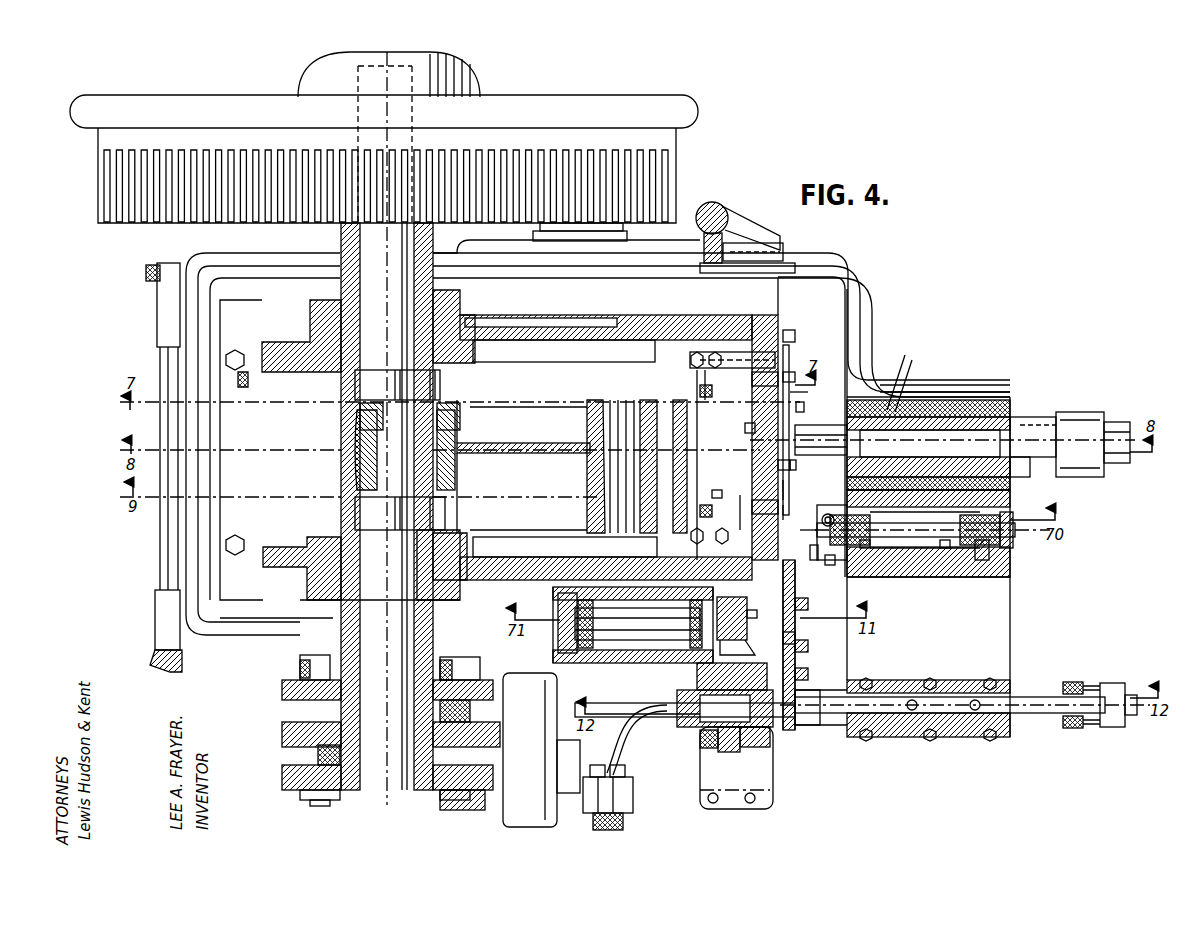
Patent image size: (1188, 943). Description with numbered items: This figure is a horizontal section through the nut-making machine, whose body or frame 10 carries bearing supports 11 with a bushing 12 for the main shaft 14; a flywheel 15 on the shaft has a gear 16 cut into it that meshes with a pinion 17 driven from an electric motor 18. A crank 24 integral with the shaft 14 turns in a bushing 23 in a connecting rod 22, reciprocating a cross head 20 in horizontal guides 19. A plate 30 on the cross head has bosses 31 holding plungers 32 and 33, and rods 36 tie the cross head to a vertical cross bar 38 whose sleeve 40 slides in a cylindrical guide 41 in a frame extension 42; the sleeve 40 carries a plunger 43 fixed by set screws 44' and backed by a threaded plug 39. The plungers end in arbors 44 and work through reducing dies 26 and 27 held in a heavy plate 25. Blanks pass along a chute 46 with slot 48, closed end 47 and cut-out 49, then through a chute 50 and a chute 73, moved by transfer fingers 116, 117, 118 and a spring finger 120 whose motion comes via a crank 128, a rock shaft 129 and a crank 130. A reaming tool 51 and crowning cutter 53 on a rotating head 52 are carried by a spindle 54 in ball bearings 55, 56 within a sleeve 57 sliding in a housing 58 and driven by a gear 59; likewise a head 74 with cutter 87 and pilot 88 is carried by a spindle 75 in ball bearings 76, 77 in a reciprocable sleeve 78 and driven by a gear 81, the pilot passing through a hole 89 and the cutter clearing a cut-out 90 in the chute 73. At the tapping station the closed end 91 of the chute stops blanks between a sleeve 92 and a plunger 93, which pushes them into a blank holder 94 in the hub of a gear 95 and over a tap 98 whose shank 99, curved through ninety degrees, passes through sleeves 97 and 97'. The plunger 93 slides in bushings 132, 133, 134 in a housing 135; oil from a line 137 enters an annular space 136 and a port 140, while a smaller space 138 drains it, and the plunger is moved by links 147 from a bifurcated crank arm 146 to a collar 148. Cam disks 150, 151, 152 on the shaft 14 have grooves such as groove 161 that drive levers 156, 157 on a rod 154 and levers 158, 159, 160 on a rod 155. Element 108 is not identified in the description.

The flywheel 15 is at (690, 110).
The gear 16 is at (677, 176).
The pinion 17 is at (620, 226).
The bushing 12 is at (340, 242).
The bearing supports 11 is at (478, 322).
The body or frame 10 is at (505, 575).
The main shaft 14 is at (387, 506).
The horizontal chute 73 is at (430, 622).
The bushing 23 is at (440, 405).
The crank 24 is at (407, 505).
The horizontal guides 19 is at (525, 360).
The cross head 20 is at (545, 487).
The connecting rod 22 is at (500, 452).
The heavy metal plate 25 is at (770, 320).
The reducing die 26 is at (760, 382).
The plate 30 is at (695, 470).
The bosses 31 is at (713, 451).
The plunger 32 is at (733, 352).
The electric motor 18 is at (746, 503).
The horizontal chute 50 is at (716, 487).
The pin 108 is at (745, 428).
The transfer finger 116 is at (804, 408).
The plunger 43 is at (838, 440).
The extension 42 is at (935, 385).
The cylindrical guide 41 is at (985, 385).
The threaded plug 39 is at (955, 380).
The set screws 44' is at (915, 377).
The arbors 44 is at (806, 453).
The sleeve 40 is at (1030, 420).
The vertical cross bar 38 is at (1085, 413).
The rod 36 is at (1032, 465).
The spindle 54 is at (916, 533).
The reaming tool 51 is at (805, 535).
The gear 59 is at (1013, 556).
The housing 58 is at (1010, 578).
The ball bearing 56 is at (975, 560).
The ball bearing 55 is at (868, 553).
The sleeve 57 is at (936, 551).
The crowning cutter 53 is at (815, 569).
The rotating head 52 is at (836, 574).
The closed end 47 is at (799, 473).
The cut-out 49 is at (814, 473).
The reducing die 27 is at (783, 497).
The plunger 33 is at (796, 510).
The slot 48 is at (790, 335).
The horizontal chute 46 is at (795, 380).
The spindle 75 is at (633, 625).
The gear 81 is at (566, 655).
The ball bearing 76 is at (590, 655).
The reciprocable sleeve 78 is at (632, 660).
The ball bearing 77 is at (685, 660).
The rotating head 74 is at (750, 605).
The pilot 88 is at (761, 610).
The cut-out 90 is at (783, 636).
The cutting tool 87 is at (743, 649).
The sleeve 92 is at (755, 690).
The hole 89 is at (808, 606).
The transfer finger 117 is at (800, 600).
The spring finger 120 is at (808, 646).
The transfer finger 118 is at (808, 674).
The reciprocable plunger 93 is at (818, 718).
The sleeve 97 is at (685, 725).
The bushing 134 is at (1005, 740).
The closed end 91 is at (800, 740).
The tap 98 is at (775, 740).
The gear 95 is at (725, 752).
The blank holder 94 is at (740, 750).
The curved shank 99 is at (655, 712).
The sleeve 97' is at (624, 800).
The rod 155 is at (460, 812).
The bushing 132 is at (835, 725).
The annular space 136 is at (937, 740).
The bushing 133 is at (967, 740).
The annular space 138 is at (985, 740).
The oil delivery line 137 is at (908, 678).
The housing 135 is at (955, 678).
The port 140 is at (1010, 695).
The collar 148 is at (1125, 690).
The bifurcated crank arm 146 is at (1063, 722).
The links 147 is at (1090, 686).
The rock shaft 129 is at (160, 358).
The crank 128 is at (146, 270).
The crank 130 is at (162, 672).
The cam disk 150 is at (282, 703).
The cam disk 151 is at (282, 732).
The cam disk 152 is at (282, 778).
The lever 156 is at (310, 660).
The lever 157 is at (300, 757).
The rod 154 is at (305, 795).
The cam groove 161 is at (318, 793).
The lever 158 is at (475, 664).
The lever 159 is at (470, 712).
The lever 160 is at (440, 800).